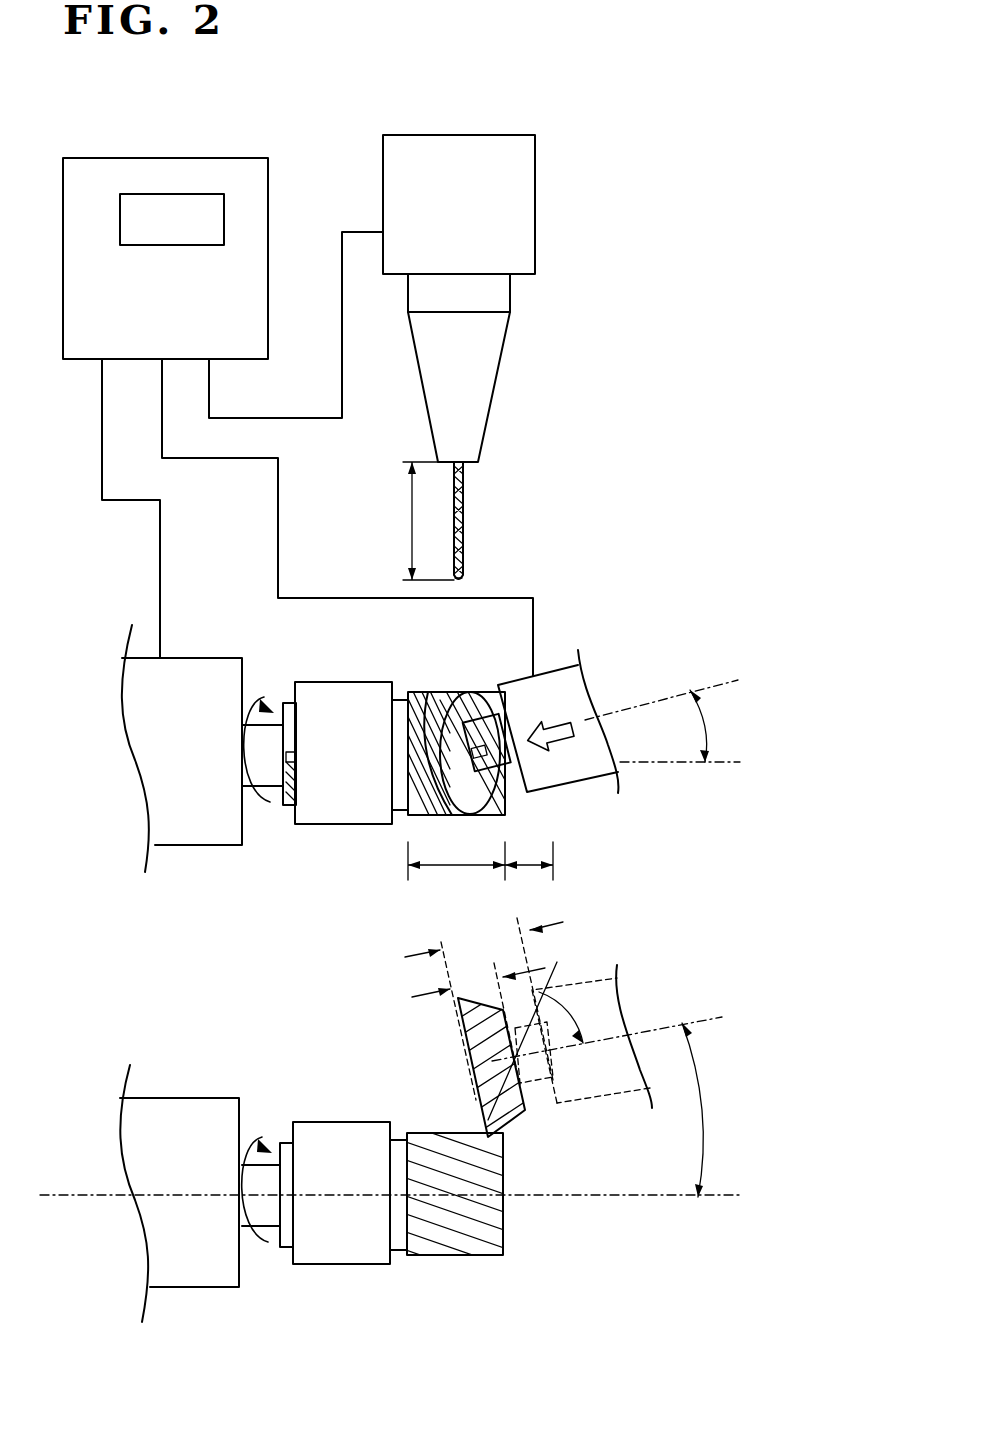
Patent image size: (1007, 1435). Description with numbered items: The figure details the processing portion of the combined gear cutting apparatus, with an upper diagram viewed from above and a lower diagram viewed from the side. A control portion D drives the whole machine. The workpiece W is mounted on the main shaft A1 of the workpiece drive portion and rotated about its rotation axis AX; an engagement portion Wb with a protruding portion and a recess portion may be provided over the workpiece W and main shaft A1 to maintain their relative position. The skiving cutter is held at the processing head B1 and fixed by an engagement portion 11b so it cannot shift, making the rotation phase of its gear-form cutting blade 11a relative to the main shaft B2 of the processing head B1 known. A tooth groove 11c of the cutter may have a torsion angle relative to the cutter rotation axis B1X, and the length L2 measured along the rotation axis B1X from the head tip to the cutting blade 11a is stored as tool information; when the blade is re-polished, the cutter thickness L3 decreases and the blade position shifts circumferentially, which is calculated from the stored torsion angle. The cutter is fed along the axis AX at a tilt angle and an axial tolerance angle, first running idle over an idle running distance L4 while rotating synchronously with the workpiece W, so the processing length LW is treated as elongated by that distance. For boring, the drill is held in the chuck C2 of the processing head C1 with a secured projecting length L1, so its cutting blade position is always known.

The control portion D is at (180, 157).
The processing head C1 is at (498, 213).
The chuck C2 is at (470, 393).
The projecting length L1 is at (408, 521).
The main shaft A1 is at (203, 818).
The engagement portion Wb is at (290, 806).
The workpiece W is at (343, 797).
The cutting blade 11a is at (402, 720).
The engagement portion 11b is at (503, 773).
The tooth groove 11c is at (460, 690).
The processing head B1 is at (657, 1023).
The rotation axis B1X is at (646, 861).
The rotation axis AX is at (415, 980).
The processing length LW is at (456, 876).
The idle running distance L4 is at (529, 878).
The length L2 is at (484, 1009).
The thickness L3 is at (478, 1024).
The main shaft B2 is at (537, 1093).